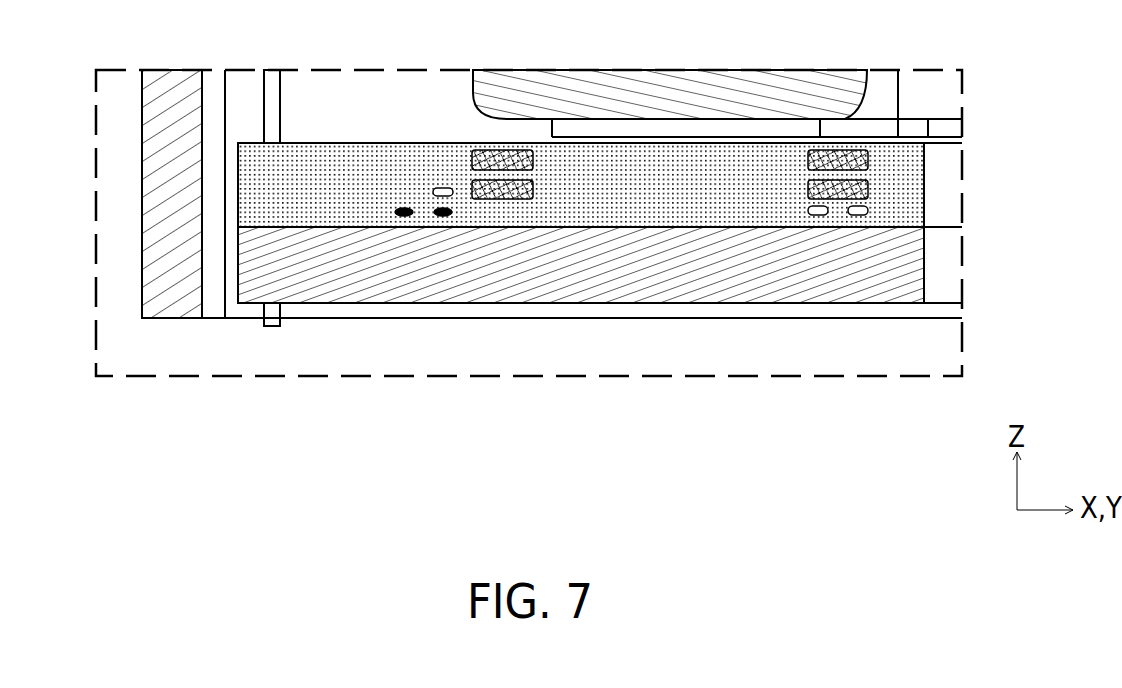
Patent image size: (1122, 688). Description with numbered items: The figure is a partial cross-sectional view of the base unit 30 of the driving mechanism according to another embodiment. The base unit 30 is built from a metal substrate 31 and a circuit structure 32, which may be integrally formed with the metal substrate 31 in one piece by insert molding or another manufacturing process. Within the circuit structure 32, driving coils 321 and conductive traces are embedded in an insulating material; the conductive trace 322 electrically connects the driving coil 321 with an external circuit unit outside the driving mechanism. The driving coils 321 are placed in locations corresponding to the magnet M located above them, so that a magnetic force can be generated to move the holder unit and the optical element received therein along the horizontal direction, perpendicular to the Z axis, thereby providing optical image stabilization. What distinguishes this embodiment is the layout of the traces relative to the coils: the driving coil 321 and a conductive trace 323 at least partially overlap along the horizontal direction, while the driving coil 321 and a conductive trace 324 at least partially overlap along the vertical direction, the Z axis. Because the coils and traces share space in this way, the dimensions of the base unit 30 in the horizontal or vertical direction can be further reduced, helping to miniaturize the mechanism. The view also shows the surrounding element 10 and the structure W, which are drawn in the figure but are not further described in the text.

The substrate 10 is at (167, 196).
The wall W is at (271, 90).
The magnet M is at (696, 95).
The base unit 30 is at (654, 223).
The metal substrate 31 is at (628, 265).
The circuit structure 32 is at (933, 184).
The driving coil 321 is at (845, 180).
The conductive trace 322 is at (443, 216).
The conductive trace 323 is at (438, 186).
The conductive trace 324 is at (858, 216).